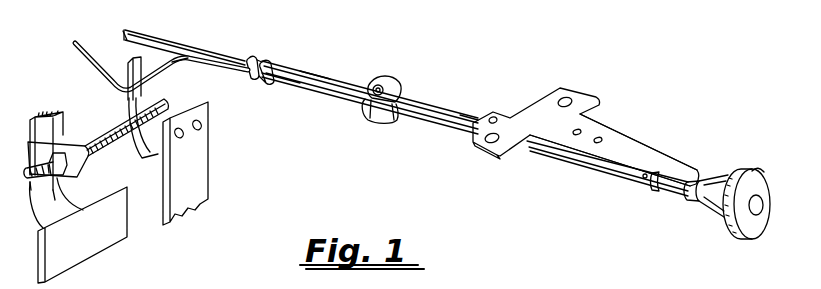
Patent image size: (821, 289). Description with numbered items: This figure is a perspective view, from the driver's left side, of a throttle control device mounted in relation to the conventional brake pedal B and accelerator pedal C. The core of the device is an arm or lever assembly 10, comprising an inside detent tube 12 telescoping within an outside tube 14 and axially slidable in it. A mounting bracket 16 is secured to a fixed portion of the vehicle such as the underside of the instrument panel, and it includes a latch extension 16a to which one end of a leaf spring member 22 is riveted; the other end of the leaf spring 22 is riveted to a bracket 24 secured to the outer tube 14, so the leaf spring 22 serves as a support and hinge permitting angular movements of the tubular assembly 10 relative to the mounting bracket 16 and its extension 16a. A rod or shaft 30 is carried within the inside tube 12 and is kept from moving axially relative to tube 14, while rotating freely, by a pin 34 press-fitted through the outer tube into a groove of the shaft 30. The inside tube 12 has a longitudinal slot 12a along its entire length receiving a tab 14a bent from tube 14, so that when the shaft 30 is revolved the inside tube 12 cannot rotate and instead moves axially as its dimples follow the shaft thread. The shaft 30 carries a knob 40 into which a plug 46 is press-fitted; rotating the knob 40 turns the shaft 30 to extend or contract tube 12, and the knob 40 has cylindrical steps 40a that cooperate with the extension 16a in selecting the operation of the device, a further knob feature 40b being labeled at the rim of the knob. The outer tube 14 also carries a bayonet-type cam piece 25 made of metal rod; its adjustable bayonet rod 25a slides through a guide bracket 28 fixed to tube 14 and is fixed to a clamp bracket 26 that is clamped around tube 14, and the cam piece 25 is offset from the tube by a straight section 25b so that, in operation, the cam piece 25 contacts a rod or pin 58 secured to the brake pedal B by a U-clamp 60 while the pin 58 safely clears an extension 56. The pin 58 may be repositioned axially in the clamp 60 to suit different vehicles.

The arm or lever assembly 10 is at (351, 80).
The inside detent tube 12 is at (194, 46).
The longitudinal slot 12a is at (128, 29).
The outside tube 14 is at (316, 79).
The tab 14a is at (246, 57).
The mounting bracket 16 is at (584, 100).
The latch extension 16a is at (627, 148).
The leaf spring member 22 is at (537, 139).
The bracket 24 is at (472, 129).
The bayonet-type cam piece 25 is at (100, 67).
The adjustable bayonet rod 25a is at (312, 92).
The straight section 25b is at (178, 65).
The bracket (clamp) 26 is at (398, 87).
The guide bracket 28 is at (268, 64).
The rod or shaft 30 is at (672, 188).
The pin 34 is at (643, 178).
The knob 40 is at (713, 207).
The cylindrical steps 40a is at (692, 191).
The lug 40b is at (763, 170).
The plug 46 is at (757, 208).
The extension 56 is at (133, 59).
The rod or pin 58 is at (136, 107).
The U-clamp 60 is at (68, 143).
The brake pedal B is at (113, 243).
The accelerator pedal C is at (200, 162).